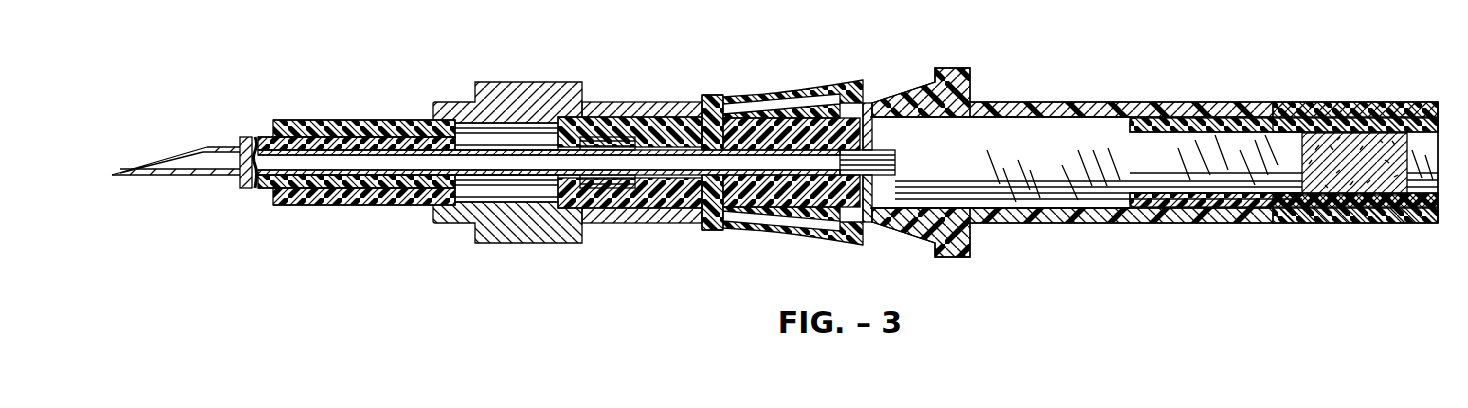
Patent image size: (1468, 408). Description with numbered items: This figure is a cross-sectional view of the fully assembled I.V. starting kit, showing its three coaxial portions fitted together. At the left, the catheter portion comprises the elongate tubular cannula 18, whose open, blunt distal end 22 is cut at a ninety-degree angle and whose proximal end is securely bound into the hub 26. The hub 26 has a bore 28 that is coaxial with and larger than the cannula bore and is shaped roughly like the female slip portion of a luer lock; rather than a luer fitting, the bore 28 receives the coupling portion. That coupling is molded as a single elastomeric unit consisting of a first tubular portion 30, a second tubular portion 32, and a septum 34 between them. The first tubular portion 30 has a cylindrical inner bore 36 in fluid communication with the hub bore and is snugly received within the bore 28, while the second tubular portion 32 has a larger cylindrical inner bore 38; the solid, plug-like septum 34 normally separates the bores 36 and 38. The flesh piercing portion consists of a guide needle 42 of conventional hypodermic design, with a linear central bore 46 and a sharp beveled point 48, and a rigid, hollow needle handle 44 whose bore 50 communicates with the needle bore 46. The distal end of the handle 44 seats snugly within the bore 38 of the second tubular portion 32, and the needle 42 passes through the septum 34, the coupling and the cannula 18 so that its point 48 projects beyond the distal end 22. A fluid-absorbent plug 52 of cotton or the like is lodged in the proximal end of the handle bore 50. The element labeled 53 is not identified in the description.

The cannula 18 is at (263, 148).
The distal end 22 is at (238, 138).
The hub 26 is at (407, 203).
The bore 28 is at (477, 137).
The first tubular portion 30 is at (597, 203).
The second tubular portion 32 is at (833, 88).
The septum 34 is at (675, 205).
The inner bore 36 is at (573, 120).
The inner bore 38 is at (810, 217).
The guide needle 42 is at (183, 178).
The needle handle 44 is at (757, 130).
The central bore 46 is at (267, 160).
The beveled point 48 is at (120, 178).
The bore 50 is at (1033, 130).
The fluid-absorbent plug 52 is at (1333, 193).
The end wall 53 is at (1343, 105).